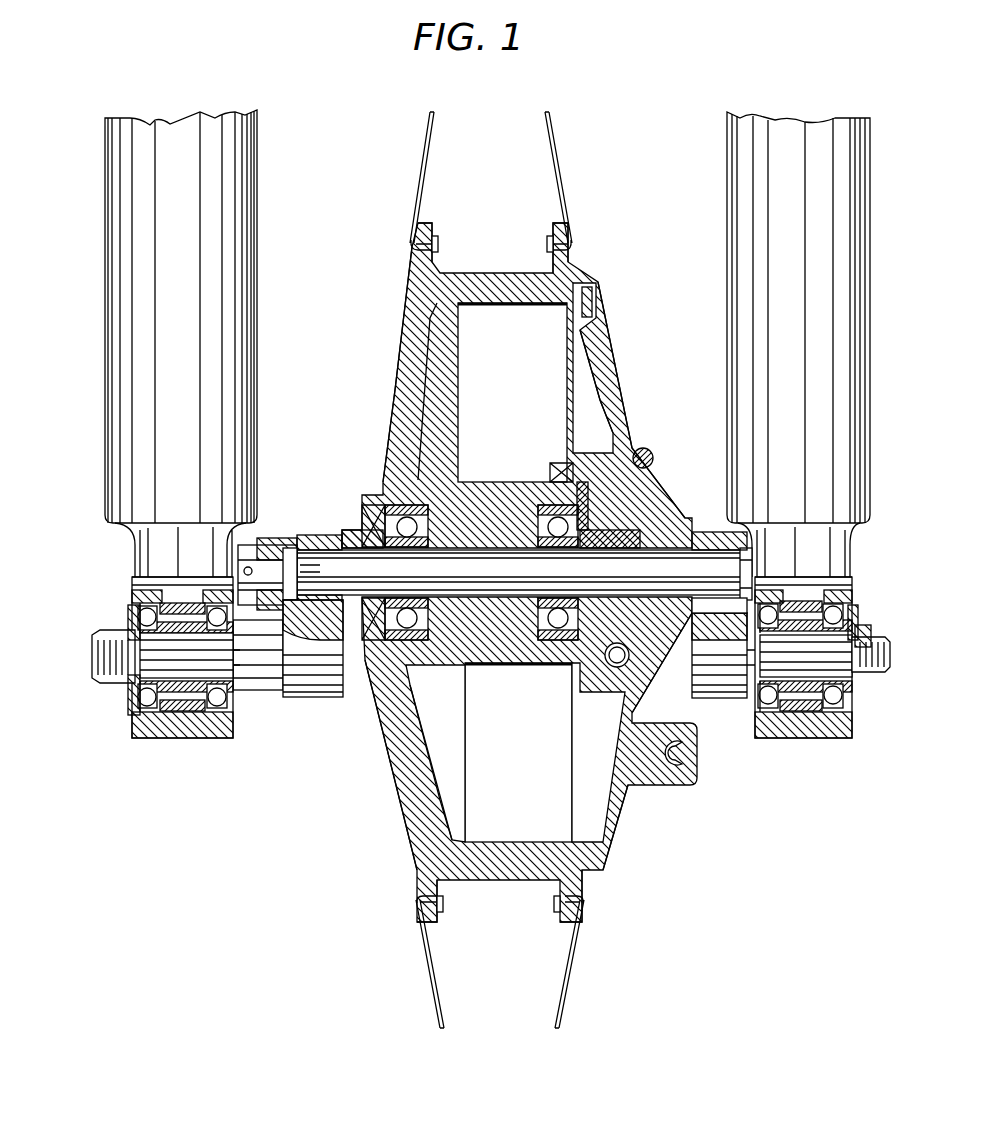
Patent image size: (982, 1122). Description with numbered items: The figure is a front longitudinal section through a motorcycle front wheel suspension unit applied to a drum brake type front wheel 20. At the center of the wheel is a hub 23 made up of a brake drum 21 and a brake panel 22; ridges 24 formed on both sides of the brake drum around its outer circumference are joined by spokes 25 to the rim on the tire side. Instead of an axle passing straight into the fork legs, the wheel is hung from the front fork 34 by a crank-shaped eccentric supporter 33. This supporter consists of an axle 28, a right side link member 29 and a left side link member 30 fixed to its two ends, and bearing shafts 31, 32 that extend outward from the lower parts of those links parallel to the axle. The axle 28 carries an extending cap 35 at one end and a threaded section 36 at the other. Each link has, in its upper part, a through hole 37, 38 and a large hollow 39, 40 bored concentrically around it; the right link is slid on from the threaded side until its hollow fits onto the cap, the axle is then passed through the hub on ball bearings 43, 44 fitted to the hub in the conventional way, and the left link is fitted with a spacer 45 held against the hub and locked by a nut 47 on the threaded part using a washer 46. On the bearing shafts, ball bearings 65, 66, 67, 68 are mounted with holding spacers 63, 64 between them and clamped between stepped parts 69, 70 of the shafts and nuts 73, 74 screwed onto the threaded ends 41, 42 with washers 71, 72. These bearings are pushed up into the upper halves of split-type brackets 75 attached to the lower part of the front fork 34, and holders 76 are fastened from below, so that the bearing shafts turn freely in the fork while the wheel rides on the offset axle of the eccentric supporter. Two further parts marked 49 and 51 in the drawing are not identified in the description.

The front wheel 20 is at (519, 530).
The brake drum 21 is at (404, 376).
The brake panel 22 is at (612, 378).
The hub 23 is at (522, 786).
The ridges 24 is at (418, 272).
The spokes 25 is at (420, 172).
The axle 28 is at (476, 545).
The right side link member 29 is at (700, 668).
The left side link member 30 is at (312, 698).
The bearing shaft 31 is at (815, 674).
The bearing shaft 32 is at (161, 662).
The crank-shaped eccentric supporter 33 is at (592, 585).
The front fork 34 is at (250, 250).
The extending cap 35 is at (765, 540).
The threaded section 36 is at (272, 625).
The through hole 37 is at (702, 530).
The through hole 38 is at (335, 582).
The large hollow 39 is at (708, 613).
The large hollow 40 is at (298, 548).
The threaded section 41 is at (890, 660).
The threaded section 42 is at (98, 650).
The ball bearing 43 is at (543, 520).
The ball bearing 44 is at (416, 667).
The spacer 45 is at (352, 530).
The washer 46 is at (283, 538).
The nut 47 is at (258, 545).
The nut 49 is at (742, 573).
The nut 51 is at (312, 540).
The holding spacer 63 is at (796, 612).
The holding spacer 64 is at (178, 610).
The ball bearing 65 is at (838, 706).
The ball bearing 66 is at (762, 704).
The ball bearing 67 is at (216, 705).
The ball bearing 68 is at (148, 710).
The stepped part 69 is at (746, 660).
The stepped part 70 is at (243, 680).
The washer 71 is at (855, 620).
The washer 72 is at (128, 616).
The nut 73 is at (870, 630).
The nut 74 is at (122, 702).
The split-type bracket 75 is at (133, 592).
The holder 76 is at (150, 745).